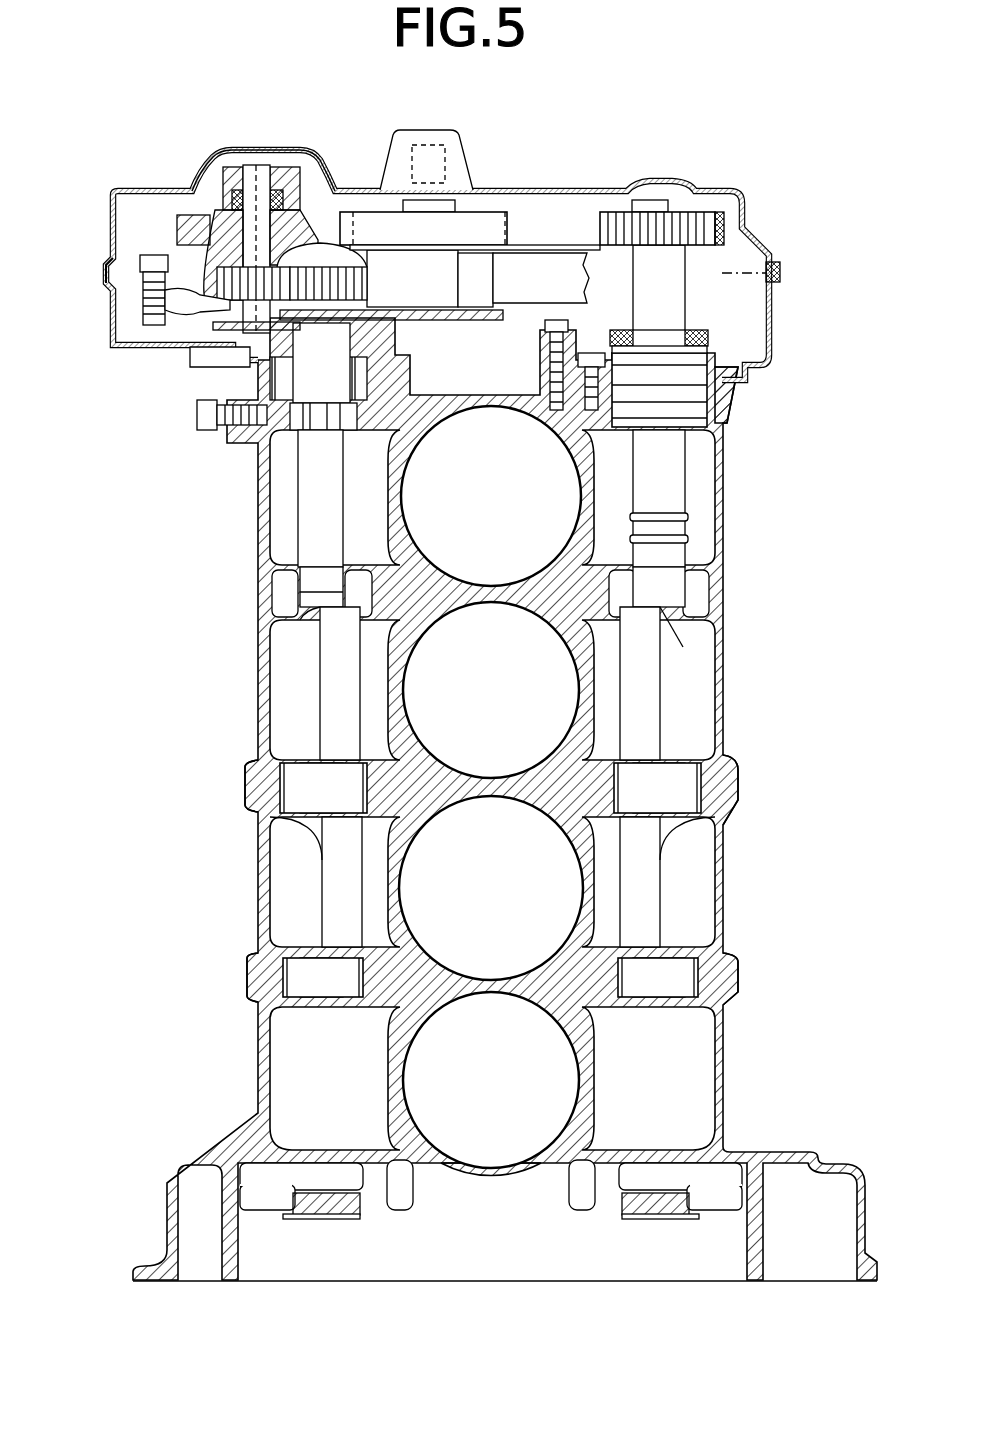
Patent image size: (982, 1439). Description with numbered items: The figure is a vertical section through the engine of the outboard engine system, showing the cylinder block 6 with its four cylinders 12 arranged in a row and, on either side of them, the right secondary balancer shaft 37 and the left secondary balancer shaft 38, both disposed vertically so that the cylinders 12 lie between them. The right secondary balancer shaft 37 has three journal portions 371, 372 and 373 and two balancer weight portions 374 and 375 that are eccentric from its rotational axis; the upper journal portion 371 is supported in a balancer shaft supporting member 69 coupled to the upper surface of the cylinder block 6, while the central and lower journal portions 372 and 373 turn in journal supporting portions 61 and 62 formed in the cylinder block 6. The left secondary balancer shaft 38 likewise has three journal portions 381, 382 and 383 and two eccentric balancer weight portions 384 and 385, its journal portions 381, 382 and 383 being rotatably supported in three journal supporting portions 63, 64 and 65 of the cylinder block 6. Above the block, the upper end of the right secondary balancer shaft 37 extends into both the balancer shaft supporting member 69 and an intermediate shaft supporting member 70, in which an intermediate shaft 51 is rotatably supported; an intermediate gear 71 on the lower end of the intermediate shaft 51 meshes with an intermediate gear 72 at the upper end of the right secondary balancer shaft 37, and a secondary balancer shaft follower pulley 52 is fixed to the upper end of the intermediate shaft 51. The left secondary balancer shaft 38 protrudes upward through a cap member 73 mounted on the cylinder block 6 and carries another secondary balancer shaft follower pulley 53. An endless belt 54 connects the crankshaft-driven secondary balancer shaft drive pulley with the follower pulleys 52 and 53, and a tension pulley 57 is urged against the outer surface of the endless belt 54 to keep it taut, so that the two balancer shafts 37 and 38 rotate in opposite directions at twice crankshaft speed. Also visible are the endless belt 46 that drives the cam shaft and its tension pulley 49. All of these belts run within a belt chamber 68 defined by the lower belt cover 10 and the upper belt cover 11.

The cylinder block 6 is at (733, 702).
The lower belt cover 10 is at (110, 347).
The upper belt cover 11 is at (110, 225).
The cylinder 12 is at (404, 497).
The right secondary balancer shaft 37 is at (288, 509).
The left secondary balancer shaft 38 is at (695, 505).
The endless belt 46 is at (530, 302).
The tension pulley 49 is at (470, 300).
The intermediate shaft 51 is at (262, 172).
The secondary balancer shaft follower pulley 52 is at (236, 162).
The secondary balancer shaft follower pulley 53 is at (668, 222).
The endless belt 54 is at (724, 228).
The tension pulley 57 is at (493, 212).
The journal supporting portion 61 is at (250, 782).
The journal supporting portion 62 is at (255, 965).
The journal supporting portion 63 is at (740, 413).
The journal supporting portion 64 is at (737, 797).
The journal supporting portion 65 is at (735, 985).
The belt chamber 68 is at (177, 222).
The balancer shaft supporting member 69 is at (200, 312).
The intermediate shaft supporting member 70 is at (185, 280).
The intermediate gear 71 is at (238, 352).
The intermediate gear 72 is at (352, 290).
The cap member 73 is at (703, 345).
The journal portion 371 is at (372, 345).
The journal portion 372 is at (292, 797).
The journal portion 373 is at (298, 987).
The balancer weight portion 374 is at (328, 693).
The balancer weight portion 375 is at (338, 853).
The journal portion 381 is at (735, 428).
The journal portion 382 is at (690, 778).
The journal portion 383 is at (690, 960).
The balancer weight portion 384 is at (652, 710).
The balancer weight portion 385 is at (655, 905).